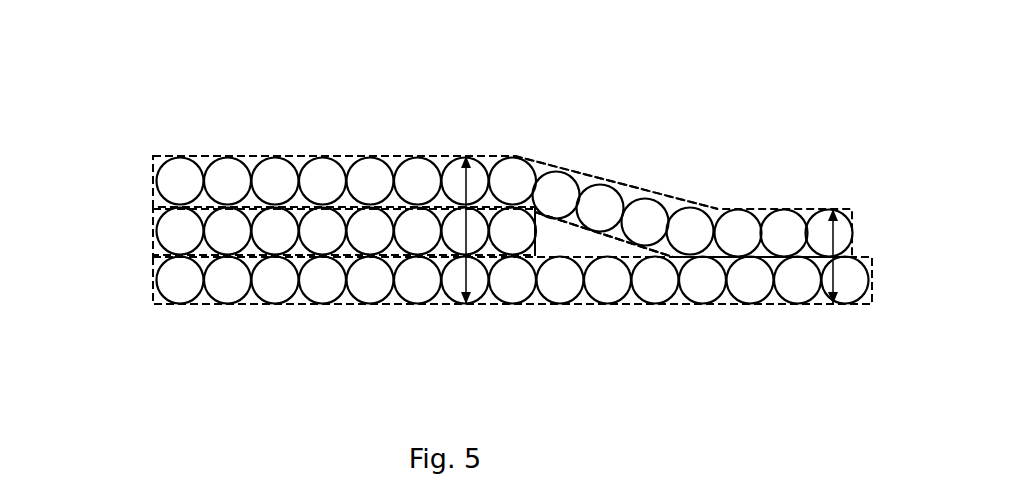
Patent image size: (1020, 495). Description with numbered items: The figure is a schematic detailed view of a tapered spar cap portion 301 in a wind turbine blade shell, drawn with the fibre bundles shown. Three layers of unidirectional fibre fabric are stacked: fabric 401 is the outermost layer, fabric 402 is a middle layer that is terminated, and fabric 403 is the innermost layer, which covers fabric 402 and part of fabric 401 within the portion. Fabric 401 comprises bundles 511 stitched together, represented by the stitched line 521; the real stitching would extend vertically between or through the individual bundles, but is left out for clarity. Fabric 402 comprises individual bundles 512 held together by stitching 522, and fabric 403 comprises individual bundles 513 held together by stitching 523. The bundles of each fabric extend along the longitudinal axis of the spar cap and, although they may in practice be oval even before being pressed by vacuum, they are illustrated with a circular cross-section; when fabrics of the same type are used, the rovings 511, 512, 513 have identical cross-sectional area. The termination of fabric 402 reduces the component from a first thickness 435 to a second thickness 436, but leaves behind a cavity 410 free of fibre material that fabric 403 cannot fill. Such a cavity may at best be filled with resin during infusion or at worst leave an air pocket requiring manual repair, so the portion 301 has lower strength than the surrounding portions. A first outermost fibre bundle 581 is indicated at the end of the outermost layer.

The spar cap portion 301 is at (189, 74).
The fabric 401 is at (138, 279).
The fabric 402 is at (138, 230).
The fabric 403 is at (138, 180).
The cavity 410 is at (585, 243).
The first thickness of component 435 is at (468, 172).
The second thickness of component 436 is at (838, 213).
The rovings 511 is at (370, 287).
The rovings 512 is at (277, 233).
The rovings 513 is at (373, 175).
The fabric stitching 521 is at (535, 305).
The fabric stitching 522 is at (540, 218).
The fabric stitching 523 is at (718, 209).
The first outermost fibre bundle 581 is at (848, 288).